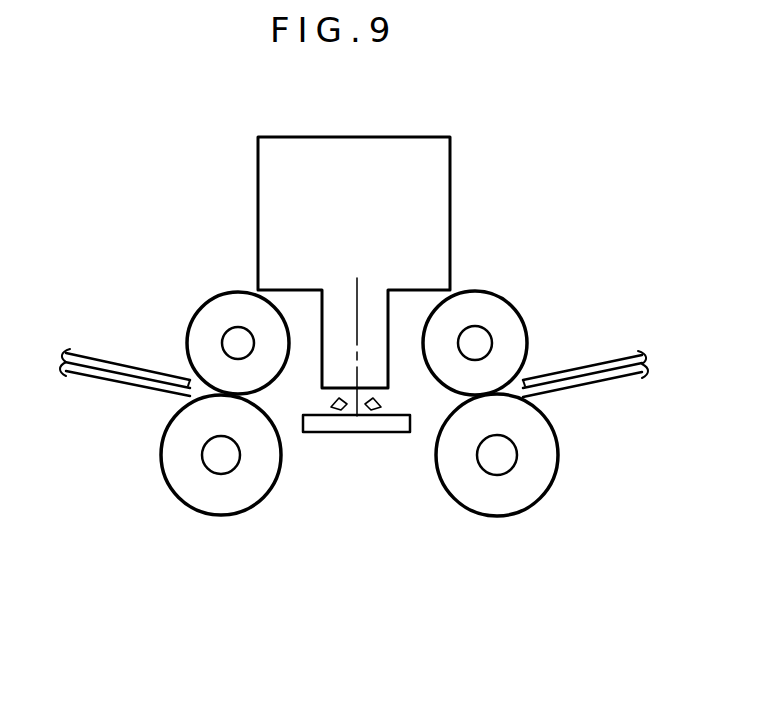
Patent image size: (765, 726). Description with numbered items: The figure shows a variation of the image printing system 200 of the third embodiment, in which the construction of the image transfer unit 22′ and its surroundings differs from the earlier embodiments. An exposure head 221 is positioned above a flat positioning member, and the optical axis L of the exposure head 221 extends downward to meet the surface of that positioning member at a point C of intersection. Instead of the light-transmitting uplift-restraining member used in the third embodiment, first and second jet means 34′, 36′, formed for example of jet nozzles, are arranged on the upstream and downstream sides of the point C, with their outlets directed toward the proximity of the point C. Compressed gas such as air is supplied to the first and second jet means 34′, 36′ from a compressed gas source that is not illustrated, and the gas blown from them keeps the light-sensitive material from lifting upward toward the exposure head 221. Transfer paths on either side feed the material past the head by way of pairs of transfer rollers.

The image printing system 200 is at (380, 101).
The image transfer unit 22′ is at (468, 156).
The exposure head 221 is at (437, 206).
The optical axis L is at (358, 293).
The second jet means 36′ is at (331, 405).
The first jet means 34′ is at (378, 405).
The point of intersection C is at (357, 415).